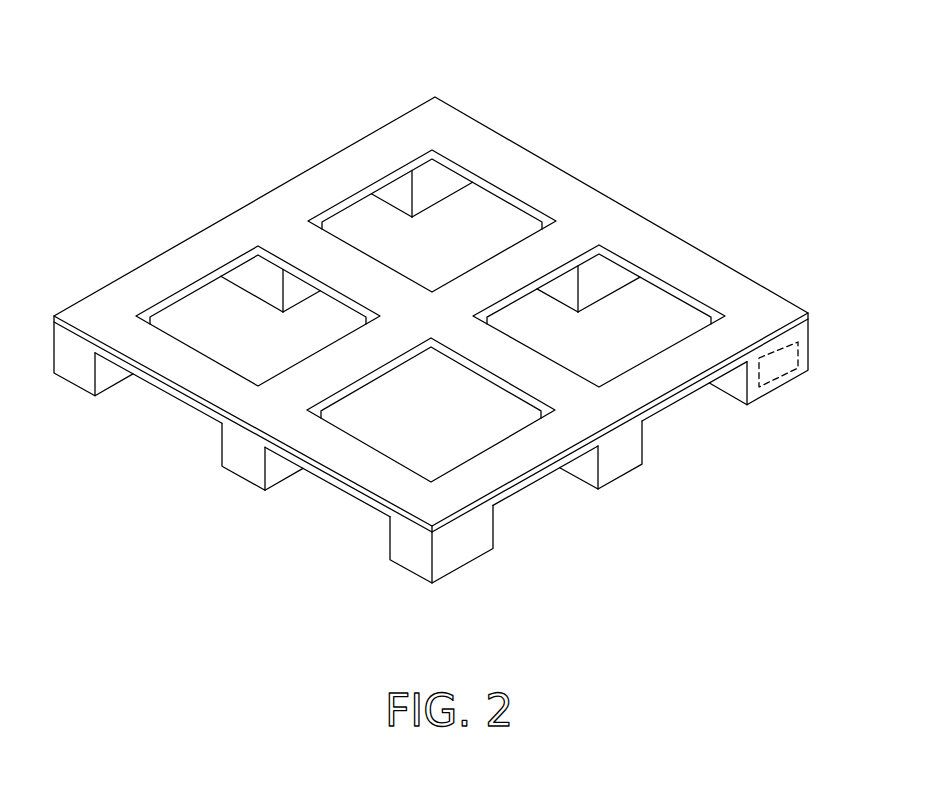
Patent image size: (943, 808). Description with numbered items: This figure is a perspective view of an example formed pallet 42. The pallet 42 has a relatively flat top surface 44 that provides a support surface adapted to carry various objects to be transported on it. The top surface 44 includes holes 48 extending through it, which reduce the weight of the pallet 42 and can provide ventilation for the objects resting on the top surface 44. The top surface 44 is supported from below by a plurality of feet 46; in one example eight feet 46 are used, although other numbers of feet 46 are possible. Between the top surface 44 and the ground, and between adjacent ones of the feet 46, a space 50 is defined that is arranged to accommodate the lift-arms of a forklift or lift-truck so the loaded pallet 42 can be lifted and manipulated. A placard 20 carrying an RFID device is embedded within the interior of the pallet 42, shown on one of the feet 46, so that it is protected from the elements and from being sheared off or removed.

The pallet 42 is at (163, 122).
The top surface 44 is at (605, 217).
The feet 46 is at (425, 198).
The holes 48 is at (202, 320).
The space 50 is at (170, 422).
The placard 20 is at (780, 368).